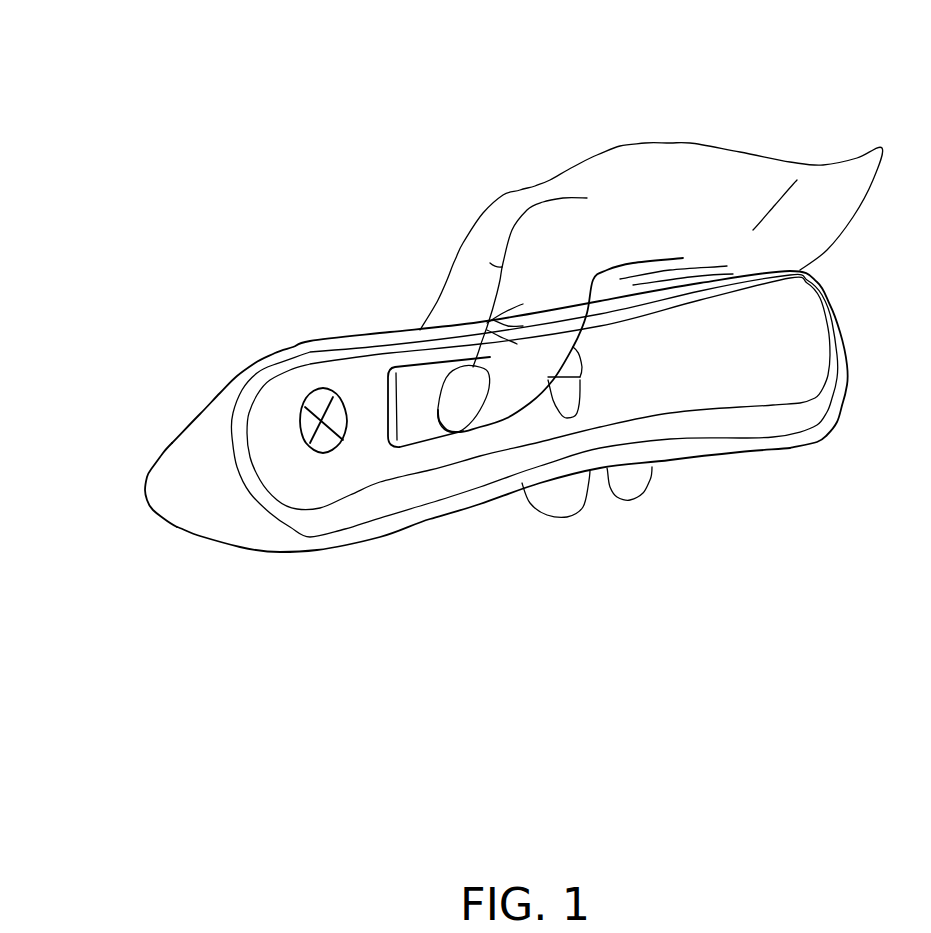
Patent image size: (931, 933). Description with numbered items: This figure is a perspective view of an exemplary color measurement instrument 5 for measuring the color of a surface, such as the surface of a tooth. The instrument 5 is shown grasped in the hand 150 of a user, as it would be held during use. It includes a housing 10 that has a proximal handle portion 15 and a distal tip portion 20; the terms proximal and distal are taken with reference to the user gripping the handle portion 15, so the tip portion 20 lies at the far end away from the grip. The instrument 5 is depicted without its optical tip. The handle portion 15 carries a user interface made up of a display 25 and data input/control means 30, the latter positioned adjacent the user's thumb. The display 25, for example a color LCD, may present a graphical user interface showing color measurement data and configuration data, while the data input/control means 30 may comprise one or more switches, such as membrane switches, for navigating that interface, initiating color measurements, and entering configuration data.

The color measurement instrument 5 is at (224, 160).
The housing 10 is at (311, 345).
The proximal handle portion 15 is at (777, 448).
The distal tip portion 20 is at (147, 497).
The display 25 is at (393, 362).
The data input/control means 30 is at (556, 400).
The hand 150 is at (723, 167).